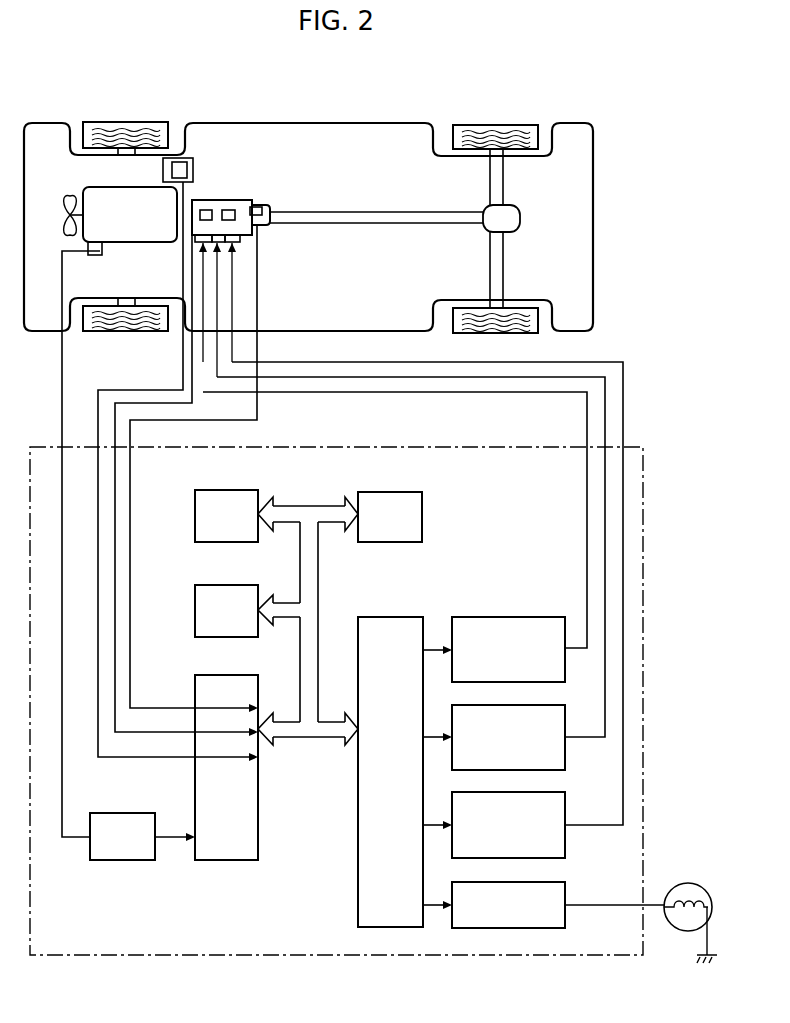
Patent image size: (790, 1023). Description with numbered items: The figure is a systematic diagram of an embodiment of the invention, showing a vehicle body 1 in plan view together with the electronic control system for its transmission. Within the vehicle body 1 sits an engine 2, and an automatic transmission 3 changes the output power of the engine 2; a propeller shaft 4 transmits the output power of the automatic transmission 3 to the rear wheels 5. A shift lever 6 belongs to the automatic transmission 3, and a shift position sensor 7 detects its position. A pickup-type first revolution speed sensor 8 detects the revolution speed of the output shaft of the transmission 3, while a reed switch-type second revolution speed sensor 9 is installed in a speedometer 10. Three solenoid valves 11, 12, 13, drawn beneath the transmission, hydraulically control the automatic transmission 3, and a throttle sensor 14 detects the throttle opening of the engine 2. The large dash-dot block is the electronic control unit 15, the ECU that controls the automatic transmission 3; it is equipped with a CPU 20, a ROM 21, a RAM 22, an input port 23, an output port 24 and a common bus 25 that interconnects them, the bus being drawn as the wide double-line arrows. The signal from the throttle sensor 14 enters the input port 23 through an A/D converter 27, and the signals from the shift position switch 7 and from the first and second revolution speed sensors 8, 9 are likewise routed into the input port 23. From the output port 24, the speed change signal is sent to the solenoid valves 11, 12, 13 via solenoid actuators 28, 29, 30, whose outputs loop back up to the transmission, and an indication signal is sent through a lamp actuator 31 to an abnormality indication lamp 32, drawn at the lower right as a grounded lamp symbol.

The vehicle body 1 is at (464, 102).
The engine 2 is at (88, 188).
The automatic transmission 3 is at (222, 200).
The propeller shaft 4 is at (335, 212).
The rear wheels 5 is at (505, 126).
The shift lever 6 is at (233, 209).
The shift position sensor 7 is at (204, 209).
The first revolution speed sensor 8 is at (262, 208).
The second revolution speed sensor 9 is at (193, 170).
The speedometer 10 is at (188, 158).
The solenoid valve S1 11 is at (208, 252).
The solenoid valve S2 12 is at (222, 250).
The solenoid valve S3 13 is at (240, 240).
The throttle sensor 14 is at (100, 251).
The electronic control unit 15 is at (646, 478).
The CPU 20 is at (422, 500).
The ROM 21 is at (195, 505).
The RAM 22 is at (195, 600).
The input port 23 is at (195, 685).
The output port 24 is at (408, 617).
The common bus 25 is at (316, 506).
The A/D converter 27 is at (113, 813).
The solenoid actuator 28 is at (552, 617).
The solenoid actuator 29 is at (565, 721).
The solenoid actuator 30 is at (565, 811).
The lamp actuator 31 is at (565, 893).
The abnormality indication lamp 32 is at (688, 883).